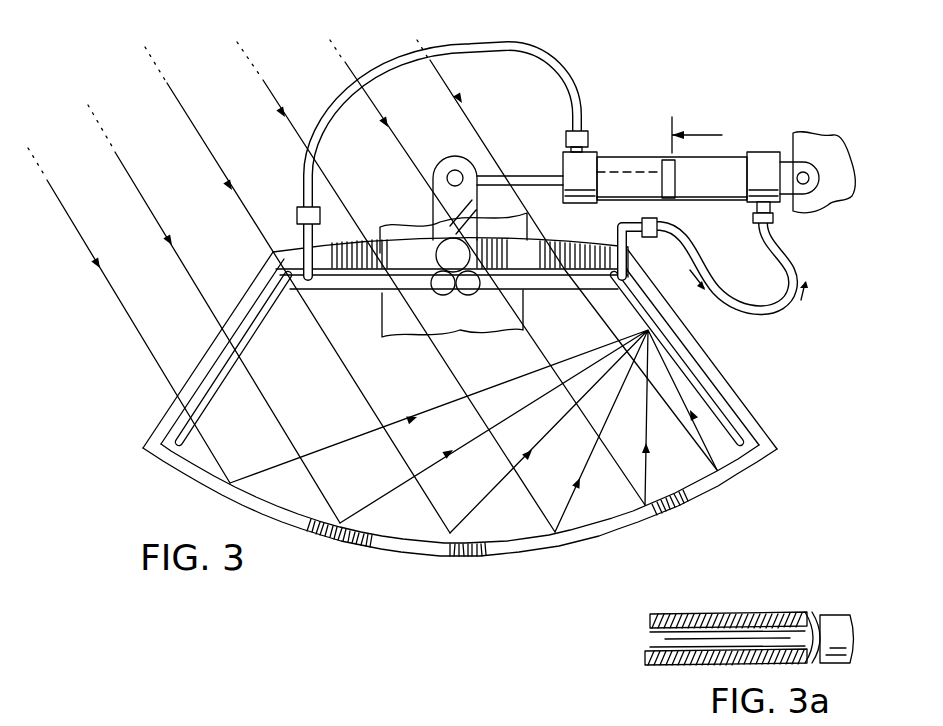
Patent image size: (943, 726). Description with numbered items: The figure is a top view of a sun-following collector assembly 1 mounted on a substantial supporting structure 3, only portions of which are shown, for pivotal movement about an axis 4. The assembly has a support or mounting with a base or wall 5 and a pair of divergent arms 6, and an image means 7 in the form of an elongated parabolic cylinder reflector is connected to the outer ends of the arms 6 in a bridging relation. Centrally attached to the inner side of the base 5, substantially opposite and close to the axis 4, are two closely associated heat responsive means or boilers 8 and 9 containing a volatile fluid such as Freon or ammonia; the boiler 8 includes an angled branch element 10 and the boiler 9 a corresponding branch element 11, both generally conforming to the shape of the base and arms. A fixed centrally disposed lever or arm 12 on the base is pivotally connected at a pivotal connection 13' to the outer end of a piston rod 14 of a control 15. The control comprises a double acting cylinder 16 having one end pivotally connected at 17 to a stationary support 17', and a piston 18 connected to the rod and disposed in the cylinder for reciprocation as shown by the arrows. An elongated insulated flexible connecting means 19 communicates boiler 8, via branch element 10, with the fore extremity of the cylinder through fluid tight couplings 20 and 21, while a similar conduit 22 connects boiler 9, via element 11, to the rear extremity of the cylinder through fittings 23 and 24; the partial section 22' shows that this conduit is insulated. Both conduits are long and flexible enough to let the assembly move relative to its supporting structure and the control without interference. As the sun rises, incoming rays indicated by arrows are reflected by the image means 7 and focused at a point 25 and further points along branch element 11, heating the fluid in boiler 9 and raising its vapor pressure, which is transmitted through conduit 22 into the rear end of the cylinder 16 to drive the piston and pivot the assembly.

In FIG. 3, the assembly 1 is at (378, 553).
In FIG. 3, the supporting structure 3 is at (390, 315).
In FIG. 3, the axis 4 is at (455, 255).
In FIG. 3, the base or wall 5 is at (354, 270).
In FIG. 3, the divergent arms 6 is at (200, 367).
In FIG. 3, the image means 7 is at (490, 557).
In FIG. 3, the boiler 8 is at (444, 294).
In FIG. 3, the boiler 9 is at (471, 294).
In FIG. 3, the branch element 10 is at (182, 430).
In FIG. 3, the branch element 11 is at (703, 388).
In FIG. 3, the lever or arm 12 is at (443, 162).
In FIG. 3, the pivot pin 13' is at (488, 140).
In FIG. 3, the piston rod 14 is at (538, 174).
In FIG. 3, the control 15 is at (770, 128).
In FIG. 3, the cylinder 16 is at (727, 157).
In FIG. 3, the pivotal connection 17 is at (806, 133).
In FIG. 3, the stationary support 17' is at (838, 151).
In FIG. 3, the piston 18 is at (668, 130).
In FIG. 3, the connecting means 19 is at (330, 108).
In FIG. 3, the fluid tight coupling 20 is at (305, 233).
In FIG. 3, the fluid tight coupling 21 is at (586, 131).
In FIG. 3, the connecting means or conduit 22 is at (734, 295).
In FIG. 3A, the flexible hose wall 22' is at (749, 607).
In FIG. 3, the coupling or fitting 23 is at (618, 236).
In FIG. 3, the coupling or fitting 24 is at (773, 221).
In FIG. 3, the point 25 is at (650, 330).